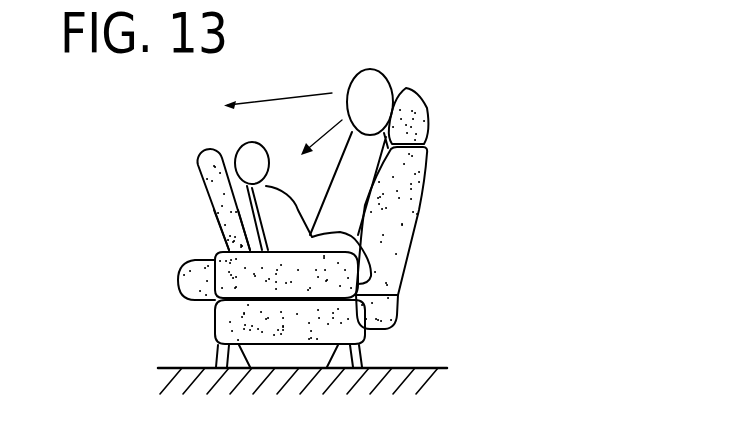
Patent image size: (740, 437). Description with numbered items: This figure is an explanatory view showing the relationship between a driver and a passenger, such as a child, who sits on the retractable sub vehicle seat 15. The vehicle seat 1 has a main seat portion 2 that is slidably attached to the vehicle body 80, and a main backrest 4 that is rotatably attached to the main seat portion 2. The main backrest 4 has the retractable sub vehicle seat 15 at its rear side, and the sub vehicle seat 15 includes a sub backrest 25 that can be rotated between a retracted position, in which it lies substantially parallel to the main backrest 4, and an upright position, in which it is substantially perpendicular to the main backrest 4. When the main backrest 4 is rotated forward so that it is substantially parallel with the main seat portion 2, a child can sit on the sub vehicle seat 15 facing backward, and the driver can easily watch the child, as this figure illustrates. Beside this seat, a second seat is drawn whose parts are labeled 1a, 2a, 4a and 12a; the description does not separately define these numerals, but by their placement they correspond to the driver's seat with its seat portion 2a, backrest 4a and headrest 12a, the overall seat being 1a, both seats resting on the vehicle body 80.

The vehicle seat 1 is at (240, 334).
The main seat portion 2 is at (293, 320).
The main backrest 4 is at (226, 264).
The retractable sub vehicle seat 15 is at (197, 160).
The sub backrest 25 is at (213, 195).
The second seat back 1a is at (426, 238).
The lower back cushion 2a is at (386, 310).
The upper back cushion 4a is at (423, 188).
The second headrest 12a is at (430, 117).
The vehicle body 80 is at (433, 363).